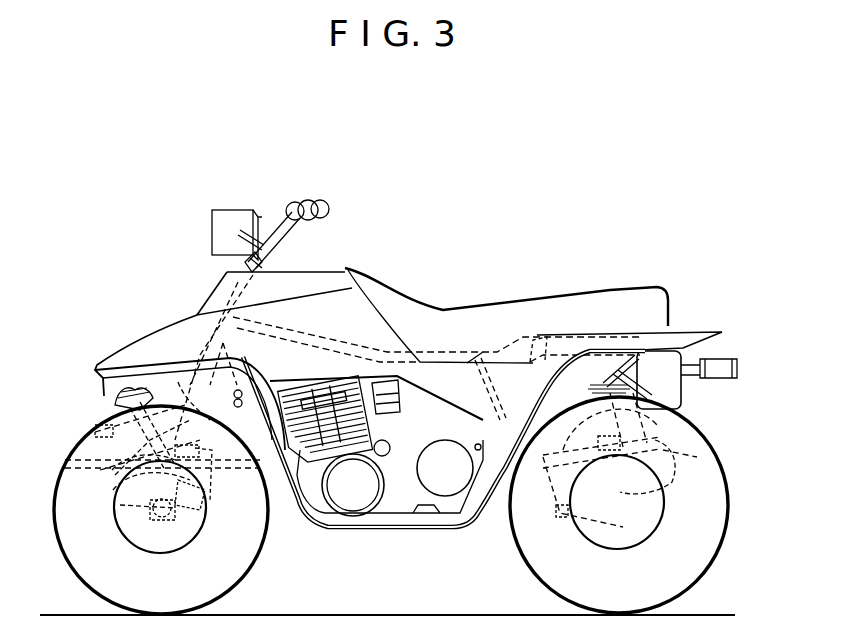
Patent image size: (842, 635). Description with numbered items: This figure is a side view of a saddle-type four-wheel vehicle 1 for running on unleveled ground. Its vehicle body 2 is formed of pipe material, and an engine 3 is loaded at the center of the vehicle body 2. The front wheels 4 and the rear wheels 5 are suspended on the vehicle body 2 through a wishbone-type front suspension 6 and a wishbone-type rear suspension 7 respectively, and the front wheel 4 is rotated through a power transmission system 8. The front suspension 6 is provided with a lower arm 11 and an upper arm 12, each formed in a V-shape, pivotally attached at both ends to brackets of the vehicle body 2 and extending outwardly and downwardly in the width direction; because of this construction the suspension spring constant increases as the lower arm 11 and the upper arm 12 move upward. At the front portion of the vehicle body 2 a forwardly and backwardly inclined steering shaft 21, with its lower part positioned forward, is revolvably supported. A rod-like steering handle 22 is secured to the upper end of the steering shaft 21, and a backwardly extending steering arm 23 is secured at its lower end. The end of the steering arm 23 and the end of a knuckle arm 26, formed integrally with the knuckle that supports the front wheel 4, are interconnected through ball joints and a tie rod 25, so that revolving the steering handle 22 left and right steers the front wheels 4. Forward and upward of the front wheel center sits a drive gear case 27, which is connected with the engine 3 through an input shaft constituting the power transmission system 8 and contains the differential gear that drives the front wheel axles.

The saddle-type four-wheel vehicle 1 is at (450, 279).
The vehicle body 2 is at (392, 529).
The engine 3 is at (352, 490).
The front wheels 4 is at (70, 466).
The rear wheels 5 is at (698, 480).
The wishbone-type front suspension 6 is at (96, 432).
The wishbone-type rear suspension 7 is at (672, 435).
The power transmission system 8 is at (244, 432).
The lower arm 11 is at (118, 492).
The upper arm 12 is at (112, 486).
The steering shaft 21 is at (200, 355).
The rod-like steering handle 22 is at (273, 233).
The steering arm 23 is at (180, 382).
The tie rod 25 is at (168, 520).
The knuckle arm 26 is at (190, 512).
The drive gear case 27 is at (100, 420).